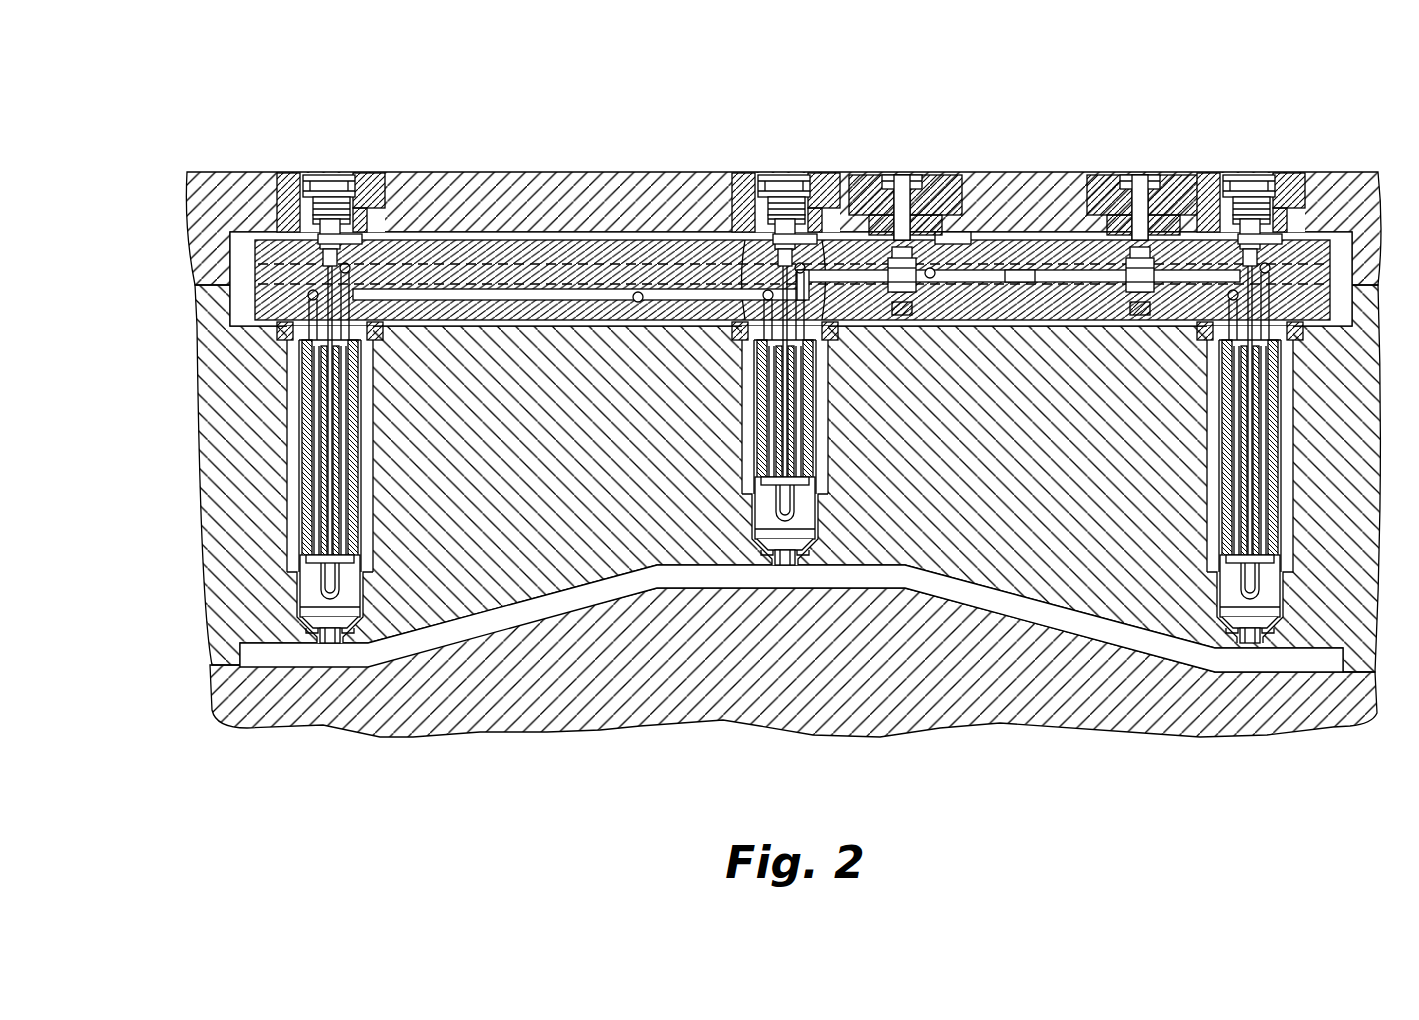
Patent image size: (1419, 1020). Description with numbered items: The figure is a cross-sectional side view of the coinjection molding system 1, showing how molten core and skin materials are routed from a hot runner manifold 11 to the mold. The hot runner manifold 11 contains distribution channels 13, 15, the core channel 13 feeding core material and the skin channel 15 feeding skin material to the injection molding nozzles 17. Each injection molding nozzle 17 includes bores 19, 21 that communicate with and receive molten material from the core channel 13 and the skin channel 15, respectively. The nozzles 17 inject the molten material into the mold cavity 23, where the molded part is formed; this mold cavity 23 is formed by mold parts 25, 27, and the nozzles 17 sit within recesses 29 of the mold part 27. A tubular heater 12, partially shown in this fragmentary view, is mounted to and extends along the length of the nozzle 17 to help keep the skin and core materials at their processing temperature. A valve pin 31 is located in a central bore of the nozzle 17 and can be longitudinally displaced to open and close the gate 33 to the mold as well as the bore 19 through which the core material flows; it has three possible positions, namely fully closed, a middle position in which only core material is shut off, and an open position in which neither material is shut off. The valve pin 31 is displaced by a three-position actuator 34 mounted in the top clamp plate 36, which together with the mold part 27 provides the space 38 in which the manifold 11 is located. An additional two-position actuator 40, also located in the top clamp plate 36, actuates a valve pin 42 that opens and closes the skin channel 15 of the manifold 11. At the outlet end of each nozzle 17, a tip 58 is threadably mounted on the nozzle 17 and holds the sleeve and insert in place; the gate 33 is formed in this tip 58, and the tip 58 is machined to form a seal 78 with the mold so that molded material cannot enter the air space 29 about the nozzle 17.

The coinjection molding system 1 is at (764, 434).
The hot runner manifold 11 is at (518, 246).
The tubular heater 12 is at (323, 584).
The distribution channel 13 is at (456, 300).
The distribution channel 15 is at (1036, 278).
The injection molding nozzle 17 is at (290, 395).
The bore 19 is at (315, 440).
The bore 21 is at (348, 515).
The mold cavity 23 is at (522, 613).
The mold part 25 is at (455, 733).
The mold part 27 is at (215, 604).
The recess 29 is at (293, 552).
The valve pin 31 is at (330, 480).
The gate 33 is at (330, 632).
The three-position actuator 34 is at (314, 168).
The top clamp plate 36 is at (583, 175).
The space 38 is at (245, 262).
The two-position actuator 40 is at (889, 168).
The valve pin 42 is at (955, 248).
The tip 58 is at (325, 640).
The seal 78 is at (300, 630).